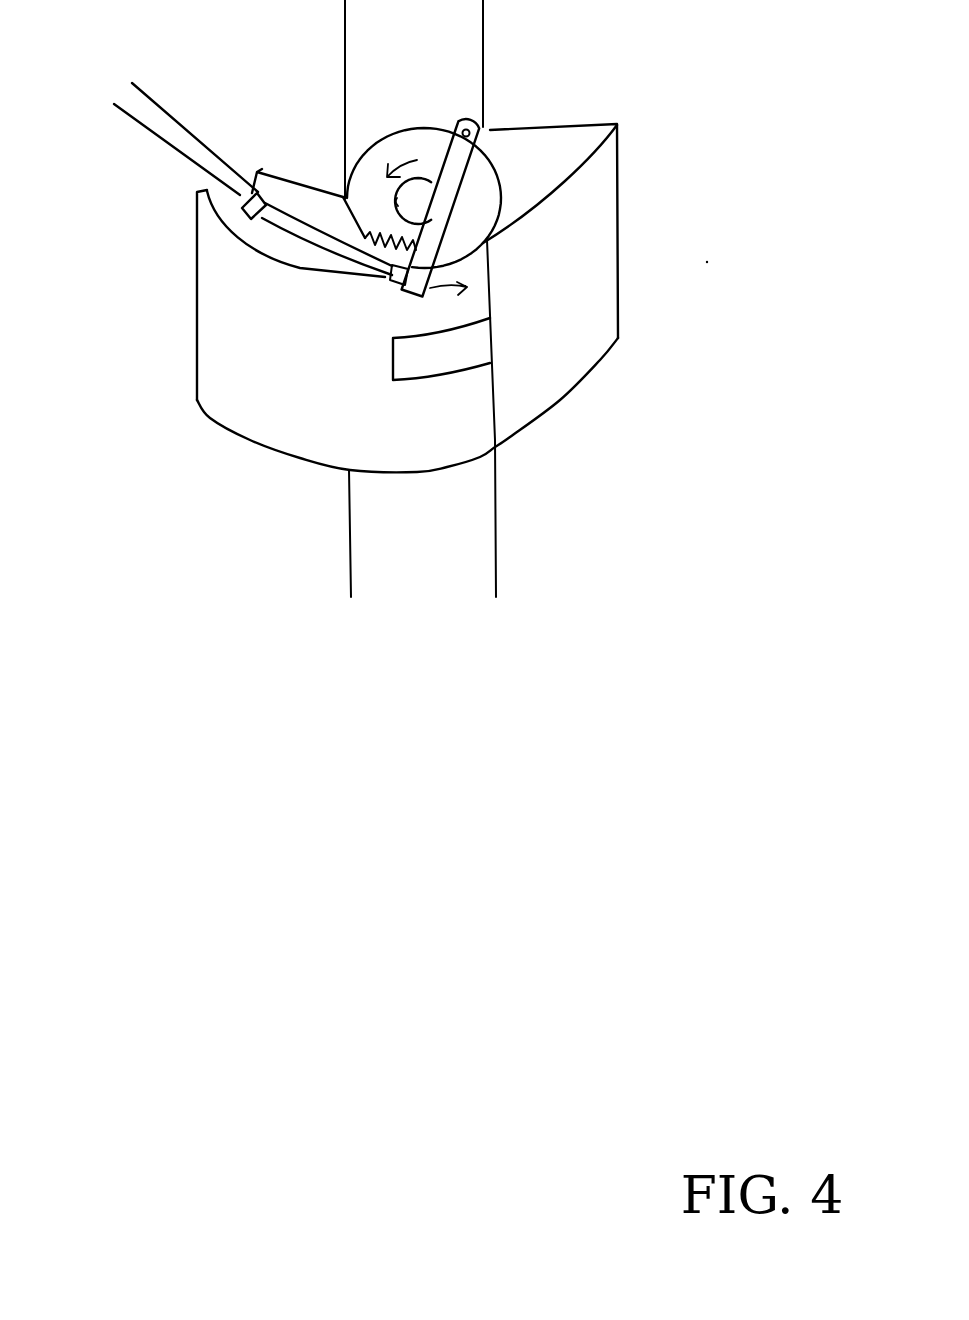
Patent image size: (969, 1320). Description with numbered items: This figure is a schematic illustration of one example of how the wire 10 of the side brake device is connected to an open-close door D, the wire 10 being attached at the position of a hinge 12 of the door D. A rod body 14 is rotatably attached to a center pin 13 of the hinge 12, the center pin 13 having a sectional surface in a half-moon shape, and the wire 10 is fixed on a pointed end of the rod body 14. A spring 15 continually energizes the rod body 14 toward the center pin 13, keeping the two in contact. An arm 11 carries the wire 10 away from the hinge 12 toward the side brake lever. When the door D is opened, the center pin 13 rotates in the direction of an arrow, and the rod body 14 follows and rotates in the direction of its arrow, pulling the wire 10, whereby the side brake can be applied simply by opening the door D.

The wire 10 is at (287, 231).
The arm 11 is at (137, 117).
The hinge 12 is at (565, 417).
The center pin 13 is at (397, 193).
The rod body 14 is at (494, 173).
The spring 15 is at (343, 197).
The door D is at (598, 570).